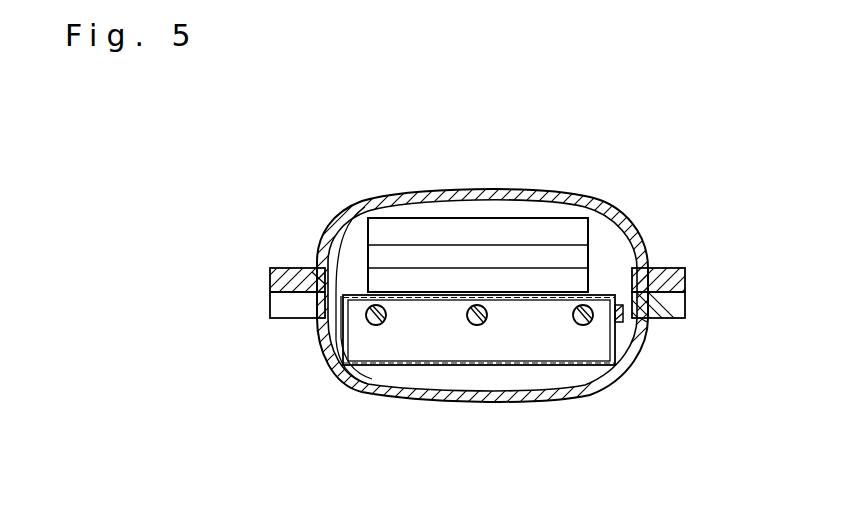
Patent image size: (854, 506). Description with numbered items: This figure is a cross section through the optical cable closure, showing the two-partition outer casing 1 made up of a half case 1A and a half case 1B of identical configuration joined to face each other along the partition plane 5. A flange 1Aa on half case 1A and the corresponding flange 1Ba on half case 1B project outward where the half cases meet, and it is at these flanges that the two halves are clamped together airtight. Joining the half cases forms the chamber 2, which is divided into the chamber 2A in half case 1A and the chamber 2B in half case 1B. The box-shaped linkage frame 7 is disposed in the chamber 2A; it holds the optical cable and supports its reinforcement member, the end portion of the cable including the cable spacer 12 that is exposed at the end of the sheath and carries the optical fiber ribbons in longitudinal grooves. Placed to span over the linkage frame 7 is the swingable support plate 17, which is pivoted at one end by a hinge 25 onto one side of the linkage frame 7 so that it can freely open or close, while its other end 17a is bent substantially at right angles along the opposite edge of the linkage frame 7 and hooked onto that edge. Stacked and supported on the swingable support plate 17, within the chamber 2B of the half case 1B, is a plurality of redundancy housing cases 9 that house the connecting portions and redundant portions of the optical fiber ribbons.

The outer casing 1 is at (402, 263).
The half case 1A is at (512, 393).
The half case 1B is at (588, 194).
The flange 1Aa is at (685, 304).
The upper housing boss 1Ba is at (672, 277).
The chamber 2 is at (306, 282).
The chamber 2A is at (322, 333).
The chamber 2B is at (358, 230).
The partition plane 5 is at (290, 318).
The linkage frame 7 is at (405, 368).
The redundancy housing case 9 is at (531, 280).
The cable spacer 12 is at (376, 326).
The swingable support plate 17 is at (598, 293).
The end 17a is at (647, 321).
The hinge 25 is at (312, 272).